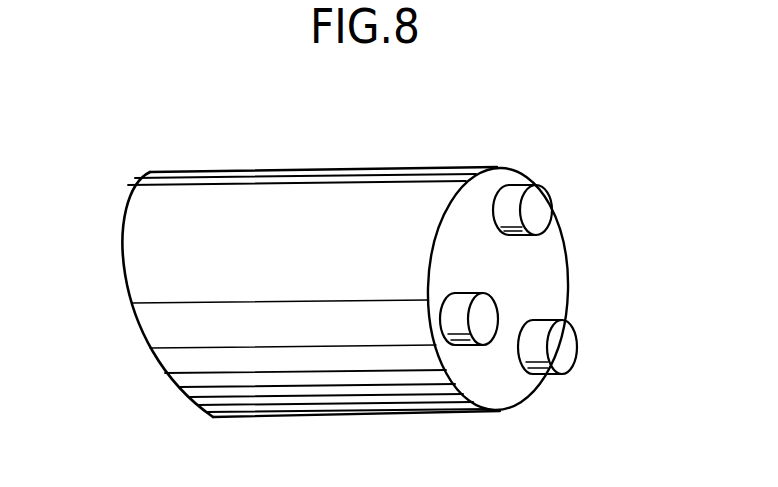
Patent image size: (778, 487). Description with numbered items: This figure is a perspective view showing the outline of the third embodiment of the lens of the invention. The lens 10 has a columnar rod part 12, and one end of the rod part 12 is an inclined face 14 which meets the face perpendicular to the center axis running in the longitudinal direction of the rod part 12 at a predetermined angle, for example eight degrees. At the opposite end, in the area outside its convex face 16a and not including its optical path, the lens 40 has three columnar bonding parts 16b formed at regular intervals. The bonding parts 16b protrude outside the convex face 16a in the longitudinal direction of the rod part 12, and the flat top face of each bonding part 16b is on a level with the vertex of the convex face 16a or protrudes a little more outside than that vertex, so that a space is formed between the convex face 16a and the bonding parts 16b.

The lens 10 is at (264, 159).
The rod part 12 is at (331, 192).
The inclined face 14 is at (146, 328).
The convex face 16a is at (549, 277).
The bonding parts 16b is at (542, 207).
The lens 40 is at (606, 148).